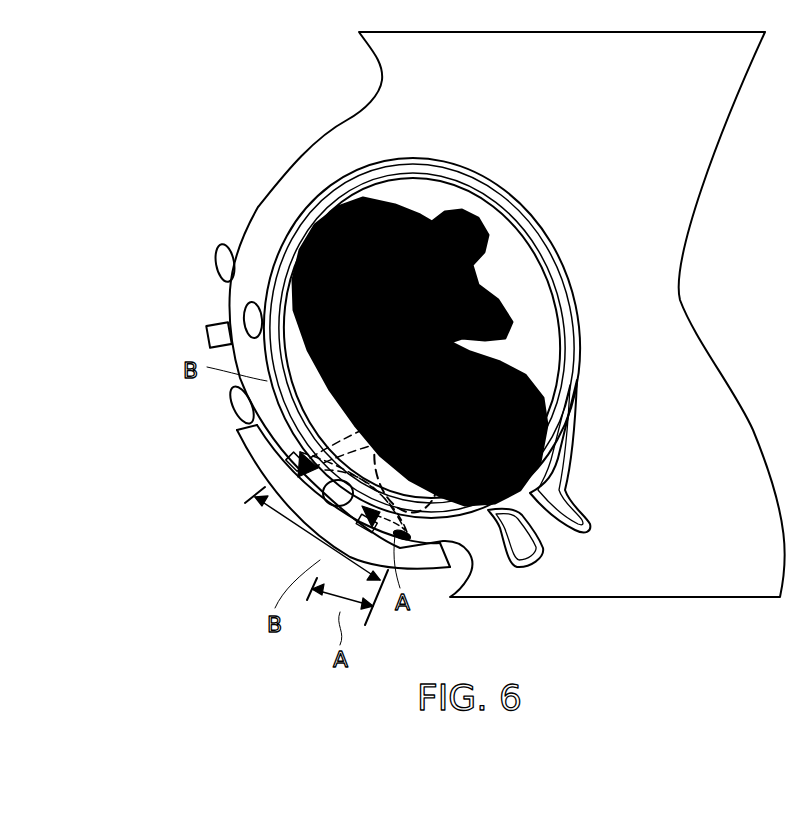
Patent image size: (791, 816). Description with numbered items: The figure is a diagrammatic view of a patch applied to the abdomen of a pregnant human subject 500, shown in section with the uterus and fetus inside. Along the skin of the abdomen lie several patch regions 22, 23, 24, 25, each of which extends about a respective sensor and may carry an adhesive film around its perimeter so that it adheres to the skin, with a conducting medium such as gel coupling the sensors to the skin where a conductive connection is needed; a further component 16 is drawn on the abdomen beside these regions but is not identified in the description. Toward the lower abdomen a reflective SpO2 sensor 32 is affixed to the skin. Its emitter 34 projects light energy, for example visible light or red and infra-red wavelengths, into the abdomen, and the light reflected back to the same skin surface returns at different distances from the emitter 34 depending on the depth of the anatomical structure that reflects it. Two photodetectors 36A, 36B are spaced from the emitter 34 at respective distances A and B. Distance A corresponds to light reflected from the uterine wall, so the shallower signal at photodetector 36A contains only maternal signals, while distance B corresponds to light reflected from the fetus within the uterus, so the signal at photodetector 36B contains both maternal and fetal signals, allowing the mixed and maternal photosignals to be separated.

The pregnant human subject 500 is at (130, 451).
The reflective SpO2 sensor 32 is at (236, 441).
The patch region 22 is at (218, 244).
The patch region 23 is at (244, 304).
The electronics module 16 is at (207, 334).
The patch region 24 is at (232, 406).
The photodetector 36B is at (288, 465).
The patch region 25 is at (325, 494).
The photodetector 36A is at (355, 527).
The emitter 34 is at (413, 545).